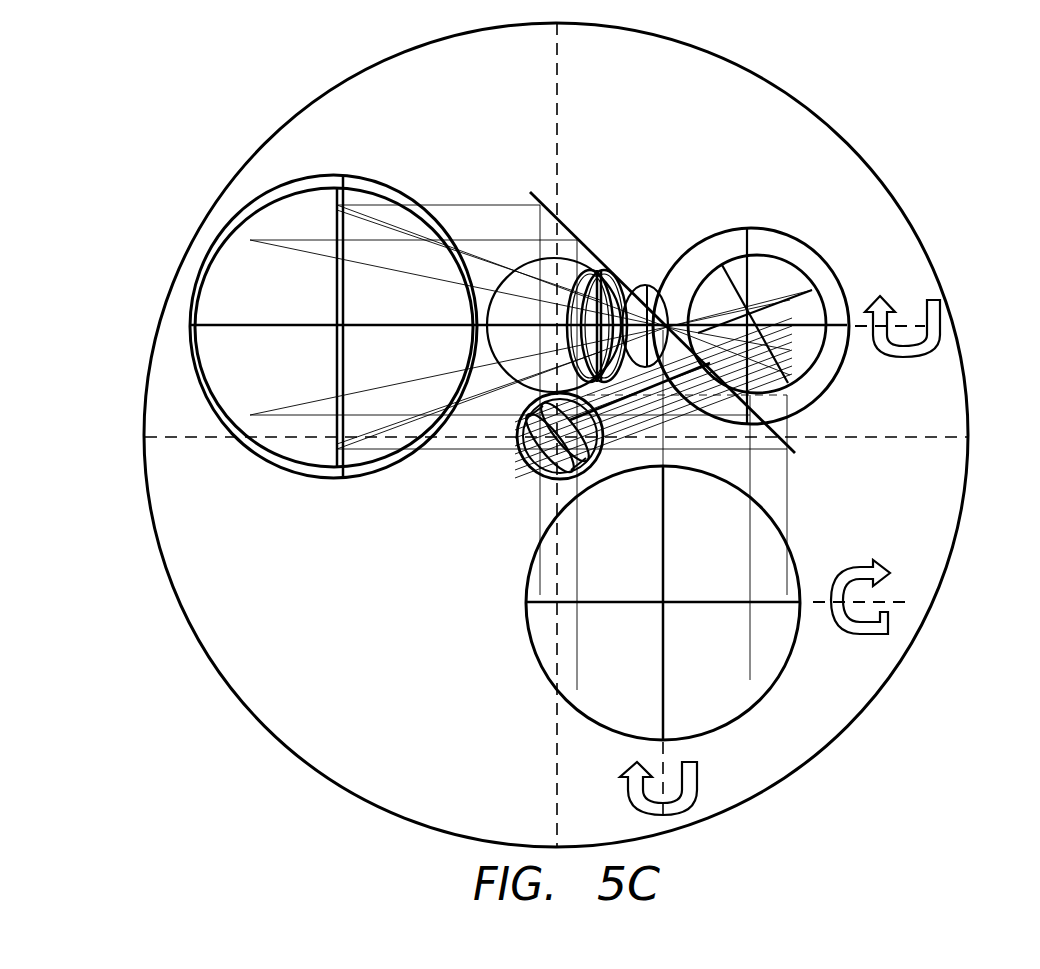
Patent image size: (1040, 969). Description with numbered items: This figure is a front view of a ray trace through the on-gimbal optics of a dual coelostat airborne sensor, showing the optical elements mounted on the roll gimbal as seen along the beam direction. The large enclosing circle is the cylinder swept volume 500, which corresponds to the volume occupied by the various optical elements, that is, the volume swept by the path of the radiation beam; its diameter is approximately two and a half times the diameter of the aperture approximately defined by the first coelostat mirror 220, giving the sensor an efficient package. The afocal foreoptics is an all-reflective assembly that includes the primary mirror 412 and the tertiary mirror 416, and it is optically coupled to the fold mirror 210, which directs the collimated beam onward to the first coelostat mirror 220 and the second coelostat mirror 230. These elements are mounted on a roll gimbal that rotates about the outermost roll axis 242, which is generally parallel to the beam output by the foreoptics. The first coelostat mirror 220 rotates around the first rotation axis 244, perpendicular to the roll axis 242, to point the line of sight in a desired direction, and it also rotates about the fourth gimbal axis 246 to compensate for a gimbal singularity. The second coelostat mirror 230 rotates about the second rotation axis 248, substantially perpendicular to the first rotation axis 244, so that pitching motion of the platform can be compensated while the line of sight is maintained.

The cylinder swept volume 500 is at (870, 172).
The primary mirror 412 is at (403, 183).
The fold mirror 210 is at (300, 465).
The second coelostat mirror 230 is at (565, 227).
The tertiary mirror 416 is at (780, 233).
The second rotation axis 248 is at (902, 325).
The roll axis 242 is at (533, 473).
The first coelostat mirror 220 is at (540, 663).
The first rotation axis 244 is at (665, 752).
The fourth gimbal axis 246 is at (893, 603).